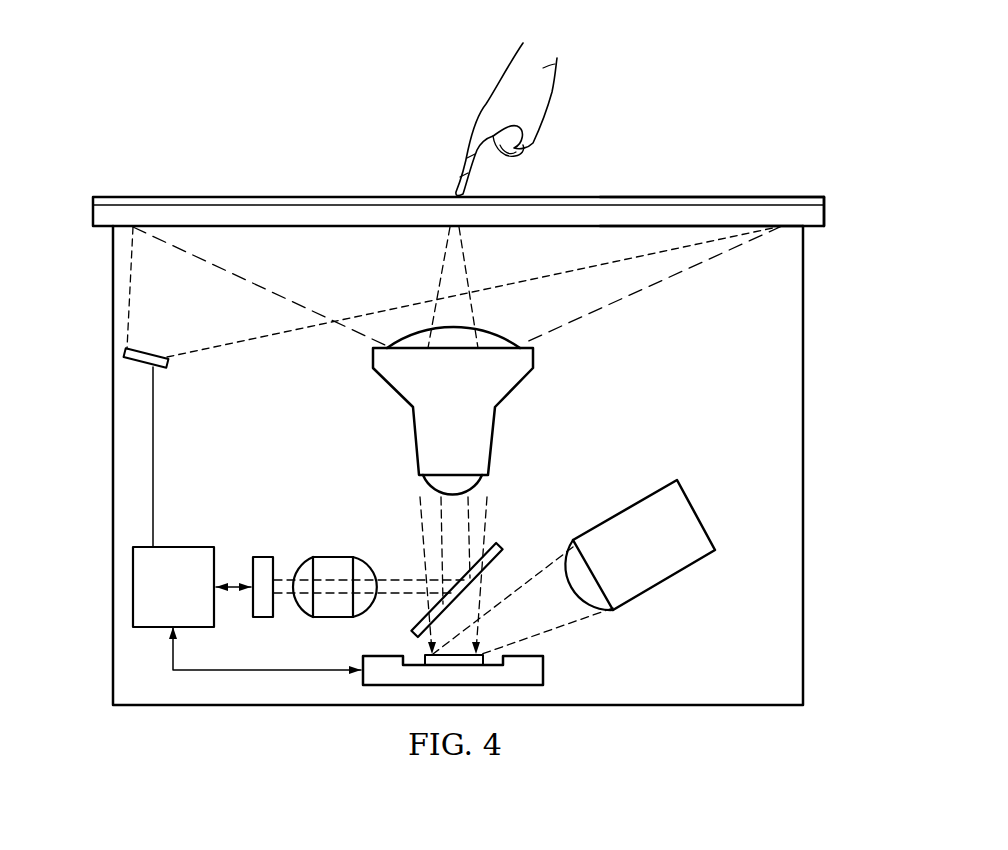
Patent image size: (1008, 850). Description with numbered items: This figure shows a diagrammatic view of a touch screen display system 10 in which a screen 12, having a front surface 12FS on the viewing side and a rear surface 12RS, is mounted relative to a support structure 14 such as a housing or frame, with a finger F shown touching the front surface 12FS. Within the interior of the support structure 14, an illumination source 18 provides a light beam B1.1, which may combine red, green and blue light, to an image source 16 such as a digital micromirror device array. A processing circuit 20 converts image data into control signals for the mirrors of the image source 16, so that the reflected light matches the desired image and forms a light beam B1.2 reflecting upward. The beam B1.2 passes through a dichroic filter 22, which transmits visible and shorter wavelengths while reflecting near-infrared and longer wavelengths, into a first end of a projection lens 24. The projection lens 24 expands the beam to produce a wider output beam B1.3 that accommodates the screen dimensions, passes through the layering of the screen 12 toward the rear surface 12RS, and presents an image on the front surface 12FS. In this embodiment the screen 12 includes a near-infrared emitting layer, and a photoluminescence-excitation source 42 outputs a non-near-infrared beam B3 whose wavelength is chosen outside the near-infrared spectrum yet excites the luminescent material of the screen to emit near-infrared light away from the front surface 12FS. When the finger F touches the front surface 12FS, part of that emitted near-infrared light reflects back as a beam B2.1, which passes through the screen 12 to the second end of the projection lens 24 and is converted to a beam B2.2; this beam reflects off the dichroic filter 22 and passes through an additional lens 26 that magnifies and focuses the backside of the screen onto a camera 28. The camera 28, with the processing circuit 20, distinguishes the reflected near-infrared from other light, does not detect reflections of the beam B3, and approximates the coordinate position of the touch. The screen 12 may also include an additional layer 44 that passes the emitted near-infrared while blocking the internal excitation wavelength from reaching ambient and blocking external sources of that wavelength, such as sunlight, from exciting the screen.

The touch screen display system 10 is at (253, 117).
The screen 12 is at (86, 197).
The front surface 12FS is at (790, 197).
The rear surface 12RS is at (776, 228).
The additional layer 44 is at (826, 200).
The finger F is at (450, 176).
The support structure 14 is at (113, 463).
The photoluminescence-excitation source 42 is at (167, 362).
The projection lens 24 is at (440, 423).
The processing circuit 20 is at (187, 603).
The camera 28 is at (266, 557).
The additional lens 26 is at (344, 557).
The dichroic filter 22 is at (502, 547).
The illumination source 18 is at (659, 556).
The image source 16 is at (543, 668).
The non-near-infrared beam B3 is at (132, 320).
The output beam B1.3 is at (628, 297).
The reflected near-infrared beam B2.1 is at (472, 271).
The converted beam B2.2 is at (402, 574).
The light beam B1.2 is at (492, 501).
The light beam B1.1 is at (567, 626).